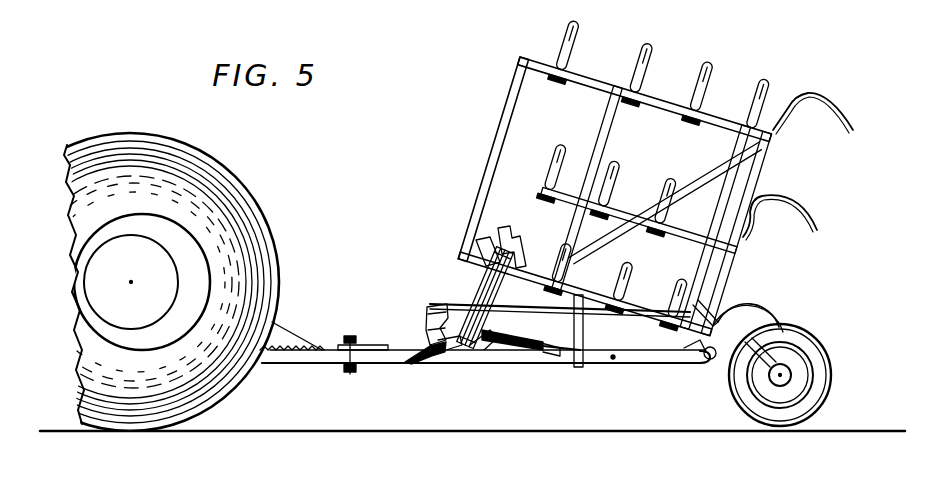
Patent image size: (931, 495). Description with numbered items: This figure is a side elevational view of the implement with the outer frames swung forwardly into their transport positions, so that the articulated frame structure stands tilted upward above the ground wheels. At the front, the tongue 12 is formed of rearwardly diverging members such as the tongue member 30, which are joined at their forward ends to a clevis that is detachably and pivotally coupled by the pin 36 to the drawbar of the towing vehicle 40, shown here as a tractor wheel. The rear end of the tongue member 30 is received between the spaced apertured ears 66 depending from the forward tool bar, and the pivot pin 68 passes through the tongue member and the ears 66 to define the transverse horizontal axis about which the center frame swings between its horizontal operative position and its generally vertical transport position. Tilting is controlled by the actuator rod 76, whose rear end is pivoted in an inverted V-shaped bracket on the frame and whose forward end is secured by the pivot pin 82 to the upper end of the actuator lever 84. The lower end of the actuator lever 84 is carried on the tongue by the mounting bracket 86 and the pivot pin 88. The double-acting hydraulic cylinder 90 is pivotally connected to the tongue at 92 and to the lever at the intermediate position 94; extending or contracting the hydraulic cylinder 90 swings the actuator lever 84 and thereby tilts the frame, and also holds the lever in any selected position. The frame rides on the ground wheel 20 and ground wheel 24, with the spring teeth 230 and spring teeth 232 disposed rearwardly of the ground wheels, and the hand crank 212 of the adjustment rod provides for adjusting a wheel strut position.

The tongue 12 is at (390, 366).
The ground wheel 20 is at (644, 217).
The ground wheel 24 is at (497, 231).
The tongue member 30 is at (510, 358).
The pin 36 is at (348, 344).
The towing vehicle 40 is at (276, 204).
The apertured ears 66 is at (693, 356).
The pivot pin 68 is at (704, 360).
The actuator rod 76 is at (452, 305).
The pivot pin 82 is at (428, 306).
The actuator lever 84 is at (427, 318).
The mounting bracket 86 is at (436, 352).
The pivot pin 88 is at (442, 350).
The hydraulic cylinder 90 is at (487, 346).
The pivotal connection 92 is at (550, 351).
The pivotal connection 94 is at (430, 333).
The hand crank 212 is at (507, 228).
The spring teeth 230 is at (798, 195).
The spring teeth 232 is at (576, 34).